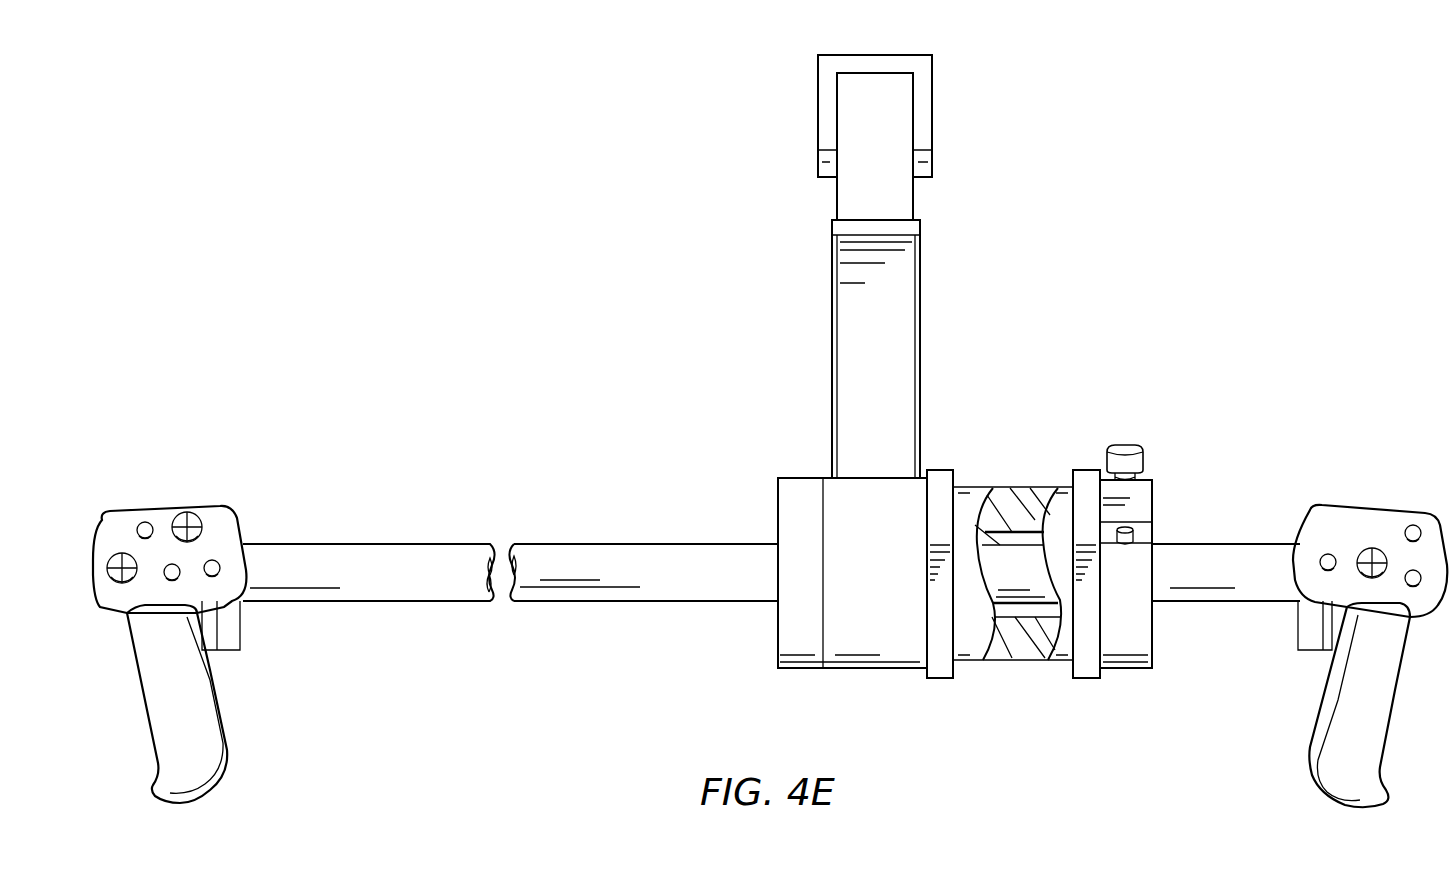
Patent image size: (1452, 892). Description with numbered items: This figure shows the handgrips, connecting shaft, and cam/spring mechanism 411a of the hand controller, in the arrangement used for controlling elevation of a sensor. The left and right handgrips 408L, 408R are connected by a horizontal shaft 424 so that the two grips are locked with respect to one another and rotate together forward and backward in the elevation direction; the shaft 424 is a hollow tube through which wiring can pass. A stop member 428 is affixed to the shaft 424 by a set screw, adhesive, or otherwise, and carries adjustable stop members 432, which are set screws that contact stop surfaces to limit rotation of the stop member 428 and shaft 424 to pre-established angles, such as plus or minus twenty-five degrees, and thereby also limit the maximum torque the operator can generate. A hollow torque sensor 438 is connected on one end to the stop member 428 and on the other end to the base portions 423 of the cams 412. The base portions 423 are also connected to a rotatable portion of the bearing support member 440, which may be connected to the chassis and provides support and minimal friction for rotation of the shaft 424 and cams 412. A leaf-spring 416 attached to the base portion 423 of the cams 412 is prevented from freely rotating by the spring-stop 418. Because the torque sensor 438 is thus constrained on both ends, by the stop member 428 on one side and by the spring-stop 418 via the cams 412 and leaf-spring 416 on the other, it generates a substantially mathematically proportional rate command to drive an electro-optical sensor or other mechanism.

The left hand grip 408L is at (132, 517).
The right hand grip 408R is at (1406, 517).
The cam/spring mechanism 411a is at (735, 376).
The cams 412 is at (832, 296).
The leaf-spring 416 is at (837, 204).
The spring-stop 418 is at (818, 115).
The base portions of the cams 423 is at (882, 668).
The shaft 424 is at (404, 544).
The stop member 428 is at (1152, 493).
The adjustable stop members 432 is at (1126, 445).
The torque sensor 438 is at (1010, 487).
The bearing support member 440 is at (778, 516).